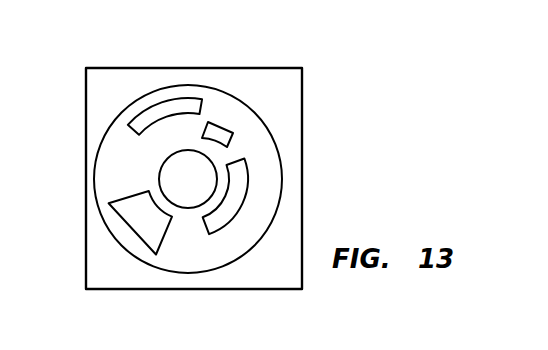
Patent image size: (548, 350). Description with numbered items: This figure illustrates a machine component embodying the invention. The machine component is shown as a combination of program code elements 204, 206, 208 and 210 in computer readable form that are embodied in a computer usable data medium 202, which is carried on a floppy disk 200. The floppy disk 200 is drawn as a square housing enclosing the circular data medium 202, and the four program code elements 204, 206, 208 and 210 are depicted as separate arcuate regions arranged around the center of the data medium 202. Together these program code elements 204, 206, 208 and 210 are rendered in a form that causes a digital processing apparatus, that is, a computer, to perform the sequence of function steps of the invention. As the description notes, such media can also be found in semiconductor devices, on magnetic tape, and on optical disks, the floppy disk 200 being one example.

The floppy disk 200 is at (211, 68).
The computer usable data medium 202 is at (140, 178).
The program code element 204 is at (243, 183).
The program code element 206 is at (222, 127).
The program code element 208 is at (157, 112).
The program code element 210 is at (130, 218).